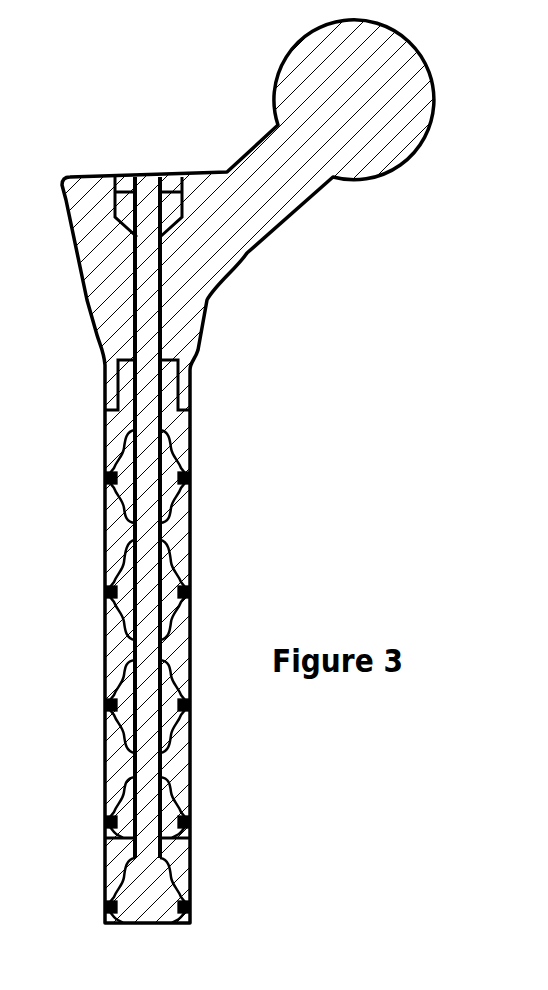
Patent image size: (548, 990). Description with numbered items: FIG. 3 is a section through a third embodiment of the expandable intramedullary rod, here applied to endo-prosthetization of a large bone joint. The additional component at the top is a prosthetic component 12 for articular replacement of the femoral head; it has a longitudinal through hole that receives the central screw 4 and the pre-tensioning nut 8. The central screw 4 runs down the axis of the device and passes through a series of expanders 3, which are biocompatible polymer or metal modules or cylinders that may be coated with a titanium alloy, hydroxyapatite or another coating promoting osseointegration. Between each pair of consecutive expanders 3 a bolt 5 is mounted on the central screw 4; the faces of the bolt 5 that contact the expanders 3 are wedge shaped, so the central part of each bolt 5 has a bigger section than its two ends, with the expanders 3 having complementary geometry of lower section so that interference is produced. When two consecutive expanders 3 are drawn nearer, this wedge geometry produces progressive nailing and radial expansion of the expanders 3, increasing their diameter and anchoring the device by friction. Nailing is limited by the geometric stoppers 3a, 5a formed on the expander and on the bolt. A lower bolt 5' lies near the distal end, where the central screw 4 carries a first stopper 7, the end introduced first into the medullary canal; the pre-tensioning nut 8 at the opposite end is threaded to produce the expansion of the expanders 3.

The prosthetic component 12 is at (212, 230).
The central screw 4 is at (162, 177).
The pre-tensioning nut 8 is at (127, 208).
The expander 3 is at (110, 540).
The bolt 5 is at (109, 591).
The geometric stopper of the expander 3a is at (177, 492).
The geometric stopper of the bolt 5a is at (163, 548).
The lower recess 5' is at (112, 800).
The first stopper 7 is at (143, 872).